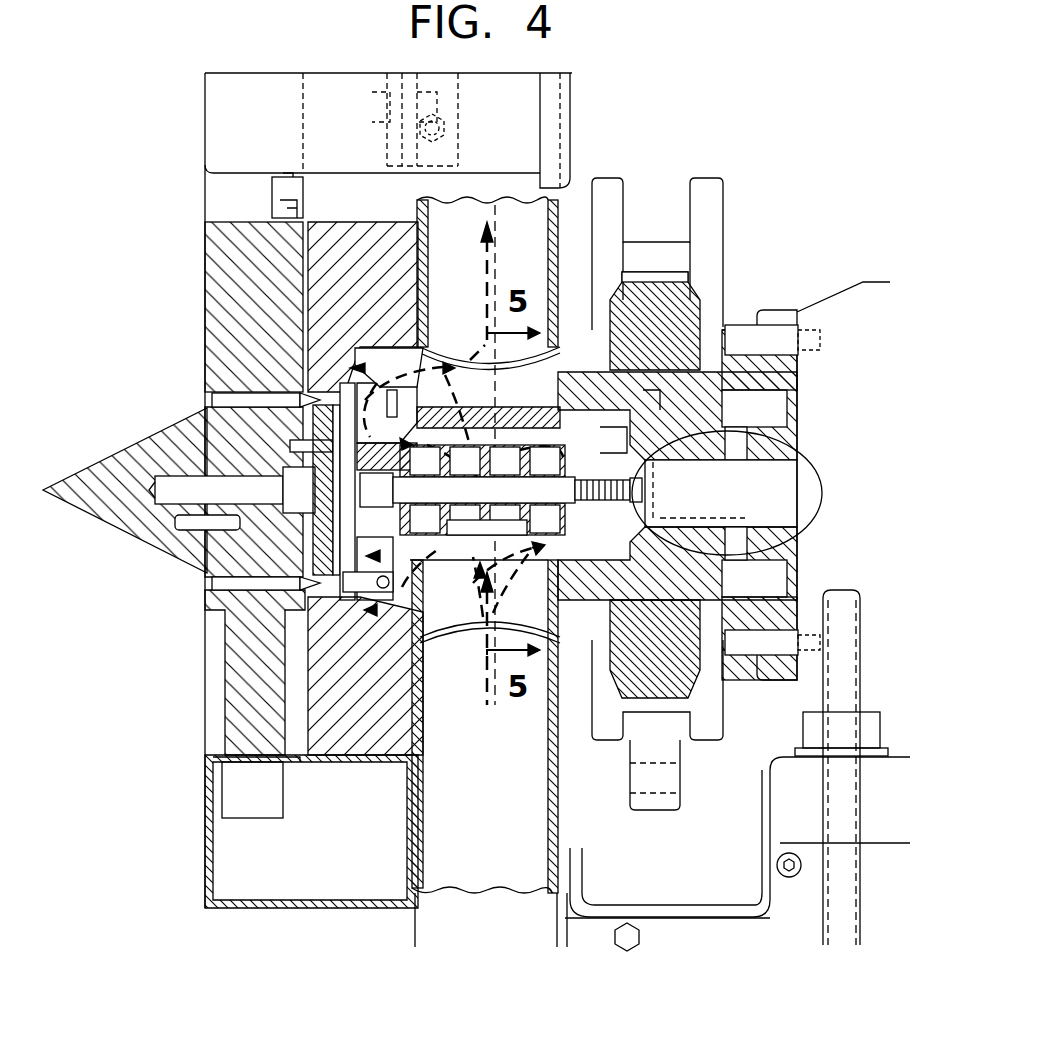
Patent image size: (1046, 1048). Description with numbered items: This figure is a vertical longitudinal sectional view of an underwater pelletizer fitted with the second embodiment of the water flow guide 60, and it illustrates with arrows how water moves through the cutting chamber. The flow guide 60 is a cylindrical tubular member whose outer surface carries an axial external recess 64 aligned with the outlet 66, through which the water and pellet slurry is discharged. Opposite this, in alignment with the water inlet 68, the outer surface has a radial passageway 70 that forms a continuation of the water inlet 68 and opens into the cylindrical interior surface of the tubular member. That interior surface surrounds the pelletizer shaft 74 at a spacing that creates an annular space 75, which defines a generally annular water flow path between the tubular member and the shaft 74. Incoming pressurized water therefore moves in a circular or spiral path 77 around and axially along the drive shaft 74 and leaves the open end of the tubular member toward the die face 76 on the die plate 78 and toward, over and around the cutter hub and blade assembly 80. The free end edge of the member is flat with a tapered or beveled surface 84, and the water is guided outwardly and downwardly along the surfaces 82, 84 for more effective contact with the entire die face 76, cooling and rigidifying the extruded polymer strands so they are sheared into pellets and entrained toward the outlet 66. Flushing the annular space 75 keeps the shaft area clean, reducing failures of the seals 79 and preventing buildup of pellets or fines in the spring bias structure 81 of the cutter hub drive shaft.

The flow guide 60 is at (343, 373).
The axial external recess 64 is at (555, 310).
The outlet 66 is at (530, 372).
The water inlet 68 is at (518, 897).
The radial passageway 70 is at (423, 603).
The pelletizer shaft 74 is at (793, 438).
The annular space 75 is at (600, 430).
The die face 76 is at (323, 545).
The circular or spiral path 77 is at (573, 640).
The die plate 78 is at (227, 272).
The seals 79 is at (653, 547).
The cutter hub and blade assembly 80 is at (350, 492).
The spring bias structure 81 is at (463, 380).
The surface 82 is at (548, 592).
The tapered or beveled surface 84 is at (410, 553).